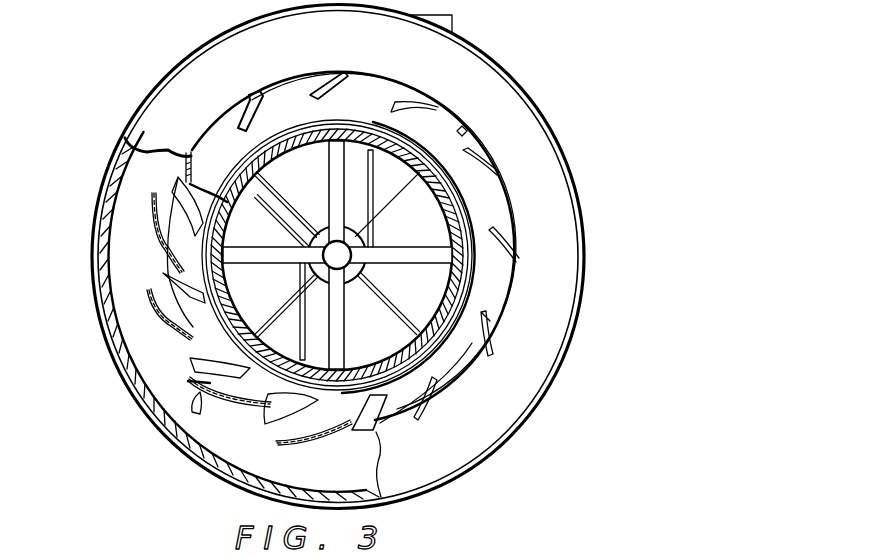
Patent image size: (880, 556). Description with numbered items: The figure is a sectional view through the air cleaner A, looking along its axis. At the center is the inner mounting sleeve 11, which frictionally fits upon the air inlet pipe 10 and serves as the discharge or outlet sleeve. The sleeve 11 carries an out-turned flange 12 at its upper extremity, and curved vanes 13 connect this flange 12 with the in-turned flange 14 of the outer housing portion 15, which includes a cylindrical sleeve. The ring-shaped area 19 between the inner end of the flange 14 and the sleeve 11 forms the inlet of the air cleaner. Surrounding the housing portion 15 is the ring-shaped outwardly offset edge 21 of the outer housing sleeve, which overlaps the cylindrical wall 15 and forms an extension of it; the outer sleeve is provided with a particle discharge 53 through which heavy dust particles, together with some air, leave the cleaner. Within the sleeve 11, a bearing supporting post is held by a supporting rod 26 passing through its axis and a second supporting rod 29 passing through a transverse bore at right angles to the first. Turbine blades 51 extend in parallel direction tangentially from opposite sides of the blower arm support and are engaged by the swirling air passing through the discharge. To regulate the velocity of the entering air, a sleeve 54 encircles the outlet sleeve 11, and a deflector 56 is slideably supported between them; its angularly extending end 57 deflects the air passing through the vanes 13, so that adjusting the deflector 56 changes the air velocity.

The air inlet pipe 10 is at (447, 203).
The inner mounting sleeve 11 is at (463, 217).
The out-turned flange 12 is at (203, 355).
The curved vanes 13 is at (163, 237).
The in-turned flange 14 is at (503, 116).
The outer housing portion 15 is at (112, 340).
The ring-shaped area 19 is at (493, 320).
The ring-shaped outwardly offset edge 21 is at (97, 252).
The supporting rod 26 is at (393, 264).
The supporting rod 29 is at (329, 187).
The turbine blades 51 is at (373, 196).
The particle discharge 53 is at (455, 26).
The sleeve 54 is at (467, 279).
The deflector 56 is at (372, 84).
The angularly extending end 57 is at (460, 360).
The air cleaner A is at (139, 412).